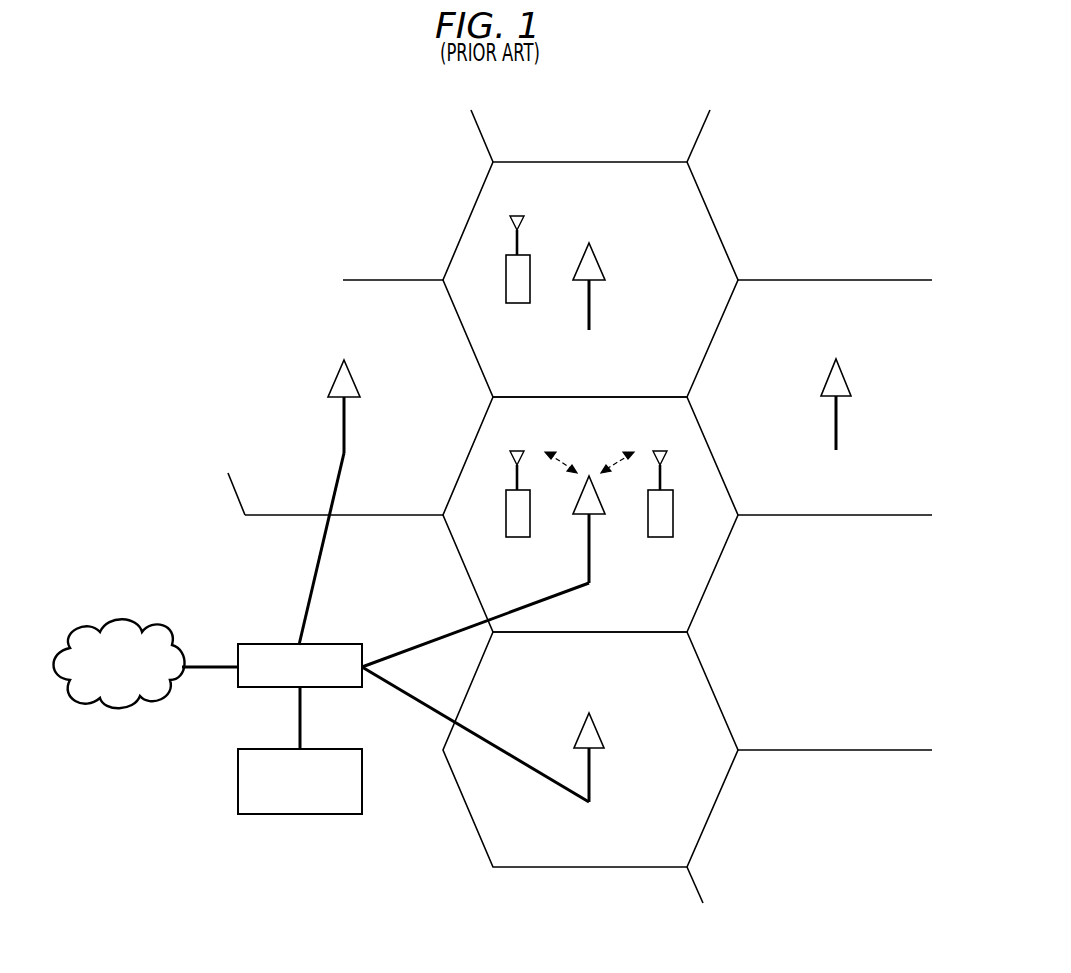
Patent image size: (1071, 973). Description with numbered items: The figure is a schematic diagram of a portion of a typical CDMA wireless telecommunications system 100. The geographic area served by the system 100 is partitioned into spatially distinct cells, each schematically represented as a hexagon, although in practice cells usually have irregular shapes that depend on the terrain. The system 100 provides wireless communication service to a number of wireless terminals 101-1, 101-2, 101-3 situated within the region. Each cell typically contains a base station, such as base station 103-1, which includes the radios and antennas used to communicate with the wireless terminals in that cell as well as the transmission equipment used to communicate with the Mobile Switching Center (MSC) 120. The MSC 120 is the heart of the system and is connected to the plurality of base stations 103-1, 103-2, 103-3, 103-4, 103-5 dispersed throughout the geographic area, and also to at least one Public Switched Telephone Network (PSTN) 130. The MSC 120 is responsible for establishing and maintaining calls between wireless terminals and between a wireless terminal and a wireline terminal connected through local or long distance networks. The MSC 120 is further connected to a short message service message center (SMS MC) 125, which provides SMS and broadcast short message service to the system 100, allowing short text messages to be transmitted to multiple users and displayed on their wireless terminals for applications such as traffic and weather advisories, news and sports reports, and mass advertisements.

The wireless telecommunications system 100 is at (329, 193).
The wireless terminal 101-1 is at (518, 537).
The wireless terminal 101-2 is at (660, 537).
The wireless terminal 101-3 is at (517, 303).
The base station 103-1 is at (591, 558).
The base station 103-2 is at (590, 313).
The base station 103-3 is at (346, 430).
The base station 103-4 is at (838, 438).
The base station 103-5 is at (591, 781).
The Mobile Switching Center 120 is at (353, 644).
The short message service message center 125 is at (362, 775).
The Public Switched Telephone Network 130 is at (167, 638).